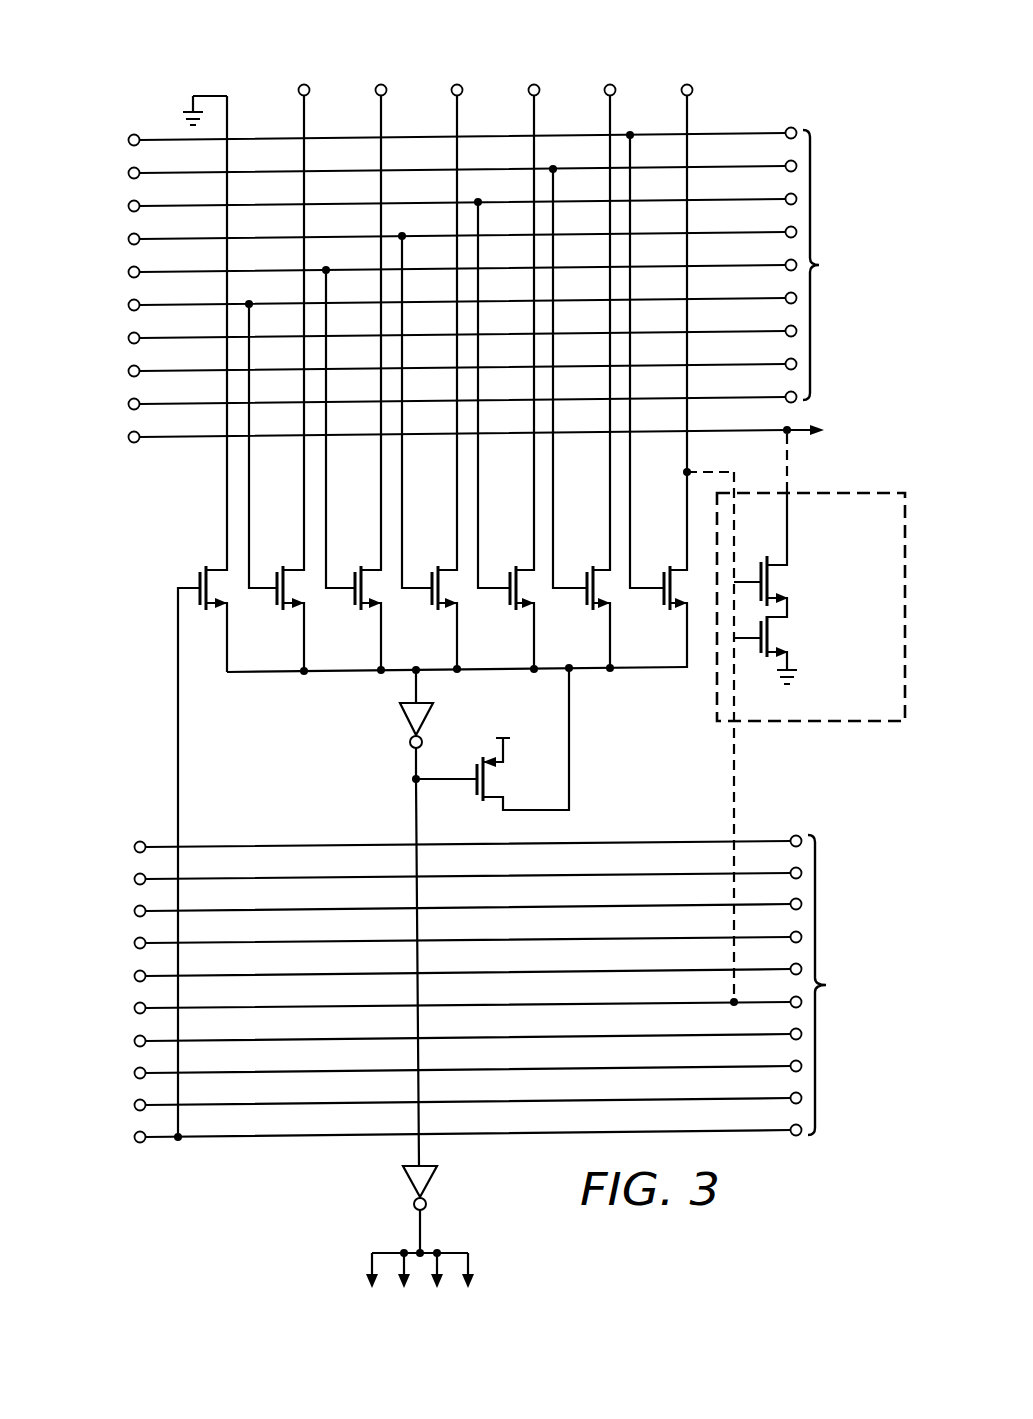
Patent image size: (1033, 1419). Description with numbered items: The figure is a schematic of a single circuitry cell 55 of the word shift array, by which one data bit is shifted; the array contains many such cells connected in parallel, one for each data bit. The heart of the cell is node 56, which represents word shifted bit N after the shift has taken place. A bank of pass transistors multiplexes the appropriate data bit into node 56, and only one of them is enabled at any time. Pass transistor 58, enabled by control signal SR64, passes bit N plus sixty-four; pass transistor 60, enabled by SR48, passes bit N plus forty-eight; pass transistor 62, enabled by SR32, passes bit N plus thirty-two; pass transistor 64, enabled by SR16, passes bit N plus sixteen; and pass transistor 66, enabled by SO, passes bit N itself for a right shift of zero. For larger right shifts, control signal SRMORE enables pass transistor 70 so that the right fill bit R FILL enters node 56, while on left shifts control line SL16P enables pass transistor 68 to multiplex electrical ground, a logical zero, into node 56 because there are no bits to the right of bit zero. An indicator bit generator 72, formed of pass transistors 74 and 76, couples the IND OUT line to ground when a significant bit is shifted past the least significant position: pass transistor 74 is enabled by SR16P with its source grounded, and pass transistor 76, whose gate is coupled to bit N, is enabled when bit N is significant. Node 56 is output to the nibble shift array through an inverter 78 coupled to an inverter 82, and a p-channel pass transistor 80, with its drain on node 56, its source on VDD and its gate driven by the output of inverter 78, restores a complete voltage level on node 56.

The circuitry cell 55 is at (126, 74).
The node 56 is at (275, 676).
The pass transistor 58 is at (369, 568).
The pass transistor 60 is at (446, 568).
The pass transistor 62 is at (523, 568).
The pass transistor 64 is at (600, 568).
The pass transistor 66 is at (677, 568).
The pass transistor 68 is at (222, 608).
The pass transistor 70 is at (292, 568).
The indicator bit generator 72 is at (838, 482).
The pass transistor 74 is at (771, 660).
The pass transistor 76 is at (778, 563).
The inverter 78 is at (406, 718).
The p-channel pass transistor 80 is at (497, 778).
The inverter 82 is at (412, 1183).